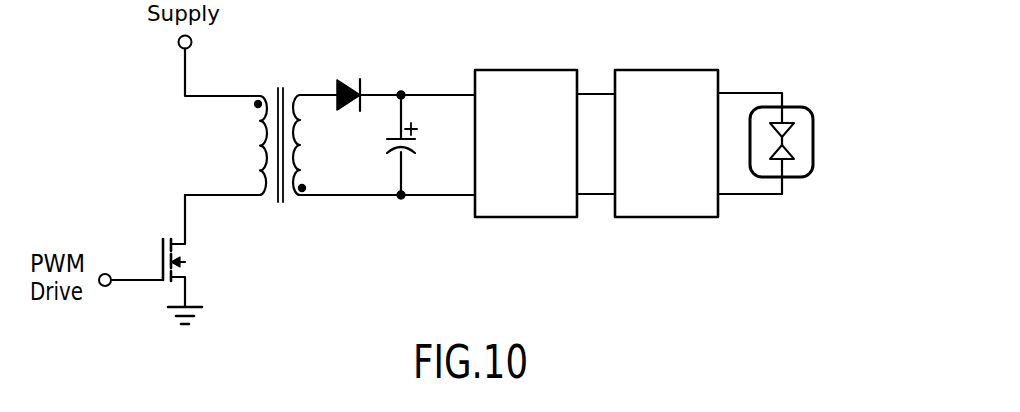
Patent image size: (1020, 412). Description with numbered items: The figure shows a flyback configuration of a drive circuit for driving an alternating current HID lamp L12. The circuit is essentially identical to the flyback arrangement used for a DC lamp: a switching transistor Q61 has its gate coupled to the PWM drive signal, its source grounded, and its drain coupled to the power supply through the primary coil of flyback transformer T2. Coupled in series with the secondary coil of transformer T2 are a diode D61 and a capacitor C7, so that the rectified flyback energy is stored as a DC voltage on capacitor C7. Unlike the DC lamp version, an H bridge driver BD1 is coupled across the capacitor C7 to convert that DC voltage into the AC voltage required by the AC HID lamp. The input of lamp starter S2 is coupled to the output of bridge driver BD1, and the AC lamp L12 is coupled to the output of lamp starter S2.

The flyback transformer T2 is at (297, 162).
The diode D61 is at (345, 79).
The capacitor C7 is at (405, 149).
The H bridge driver BD1 is at (525, 70).
The lamp starter S2 is at (682, 70).
The AC HID lamp L12 is at (795, 103).
The switching transistor Q61 is at (187, 266).